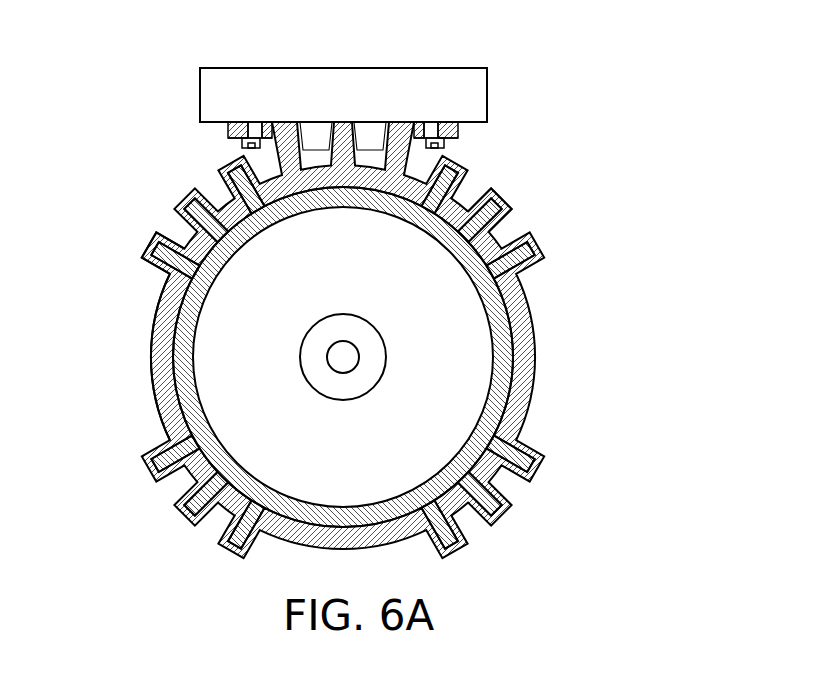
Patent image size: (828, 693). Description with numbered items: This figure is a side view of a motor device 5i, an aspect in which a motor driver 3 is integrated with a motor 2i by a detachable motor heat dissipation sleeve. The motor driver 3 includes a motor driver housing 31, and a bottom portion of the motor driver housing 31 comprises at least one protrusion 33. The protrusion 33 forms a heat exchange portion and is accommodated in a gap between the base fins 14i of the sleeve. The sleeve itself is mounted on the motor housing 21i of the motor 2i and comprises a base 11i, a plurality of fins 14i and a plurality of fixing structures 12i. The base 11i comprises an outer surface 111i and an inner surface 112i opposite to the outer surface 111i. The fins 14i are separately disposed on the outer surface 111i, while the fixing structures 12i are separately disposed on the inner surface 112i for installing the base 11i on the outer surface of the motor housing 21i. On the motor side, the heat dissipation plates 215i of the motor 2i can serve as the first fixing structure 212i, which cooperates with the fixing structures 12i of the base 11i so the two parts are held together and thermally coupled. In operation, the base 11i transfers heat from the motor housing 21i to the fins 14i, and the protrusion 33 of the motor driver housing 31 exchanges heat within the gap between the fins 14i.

The motor driver 3 is at (215, 92).
The motor driver housing 31 is at (425, 68).
The protrusion 33 is at (372, 135).
The motor device 5i is at (608, 184).
The base 11i is at (167, 318).
The outer surface 111i is at (148, 343).
The inner surface 112i is at (173, 383).
The fixing structure 12i is at (497, 205).
The fin 14i is at (147, 245).
The motor 2i is at (463, 360).
The motor housing 21i is at (492, 415).
The first fixing structure 212i is at (465, 235).
The heat dissipation plate 215i is at (193, 272).